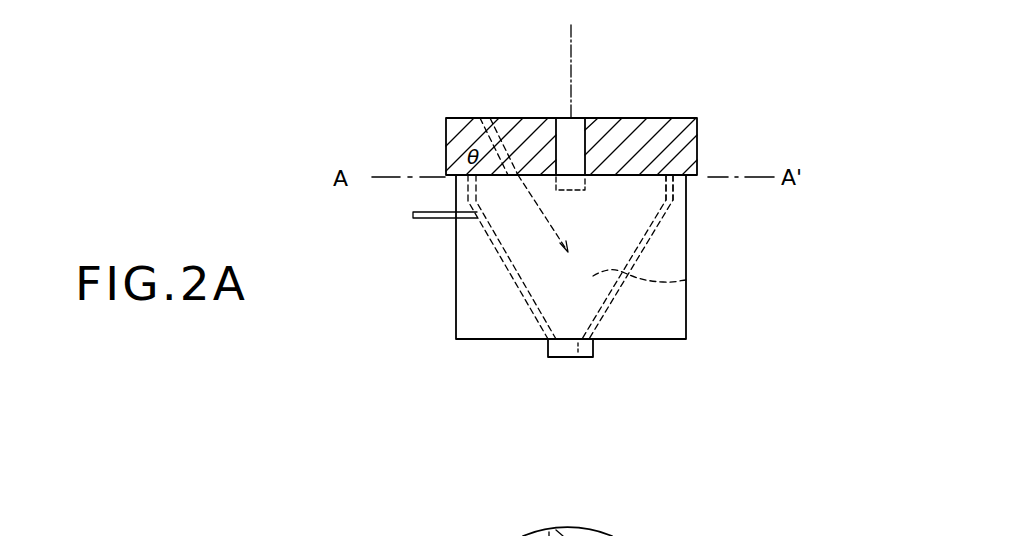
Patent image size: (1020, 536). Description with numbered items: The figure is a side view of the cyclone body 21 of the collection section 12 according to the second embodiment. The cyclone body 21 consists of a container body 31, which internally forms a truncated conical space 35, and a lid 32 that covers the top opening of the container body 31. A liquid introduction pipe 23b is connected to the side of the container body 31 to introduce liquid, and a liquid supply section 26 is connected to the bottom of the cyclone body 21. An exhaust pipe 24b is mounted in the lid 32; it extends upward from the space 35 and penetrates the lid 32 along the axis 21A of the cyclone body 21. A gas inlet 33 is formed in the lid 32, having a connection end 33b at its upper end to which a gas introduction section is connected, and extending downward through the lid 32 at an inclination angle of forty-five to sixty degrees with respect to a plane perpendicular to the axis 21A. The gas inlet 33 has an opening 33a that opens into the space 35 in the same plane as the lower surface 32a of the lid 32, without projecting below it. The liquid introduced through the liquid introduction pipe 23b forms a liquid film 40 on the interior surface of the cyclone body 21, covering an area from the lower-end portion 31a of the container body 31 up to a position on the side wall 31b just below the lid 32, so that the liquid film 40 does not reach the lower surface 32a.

The collection section 12 is at (410, 112).
The cyclone body 21 is at (452, 325).
The axis 21A is at (572, 42).
The liquid introduction pipe 23b is at (420, 220).
The exhaust pipe 24b is at (575, 118).
The liquid supply section 26 is at (560, 357).
The container body 31 is at (613, 301).
The lower-end portion 31a is at (585, 358).
The side wall 31b is at (648, 220).
The lid 32 is at (648, 118).
The lower surface 32a is at (620, 177).
The gas inlet 33 is at (511, 118).
The opening 33a is at (478, 172).
The connection end 33b is at (480, 118).
The truncated conical space 35 is at (686, 280).
The liquid film 40 is at (523, 284).